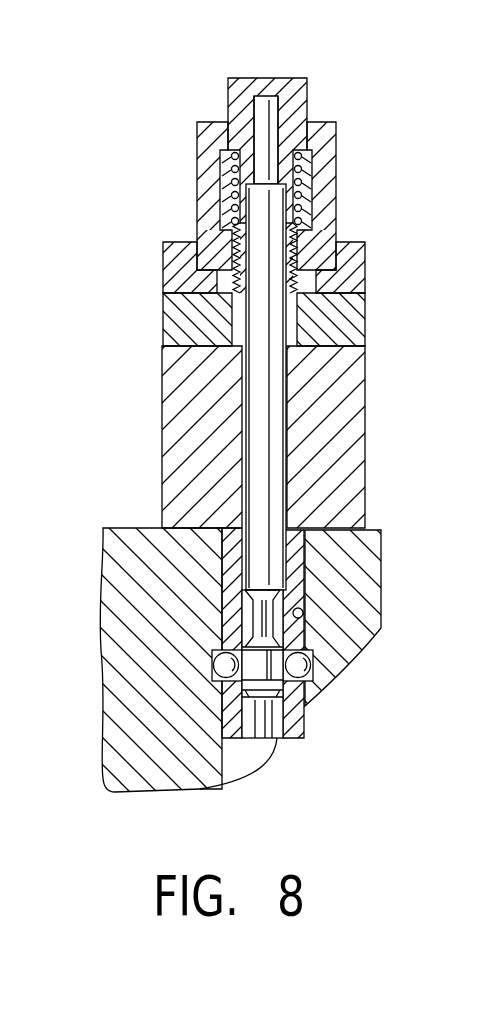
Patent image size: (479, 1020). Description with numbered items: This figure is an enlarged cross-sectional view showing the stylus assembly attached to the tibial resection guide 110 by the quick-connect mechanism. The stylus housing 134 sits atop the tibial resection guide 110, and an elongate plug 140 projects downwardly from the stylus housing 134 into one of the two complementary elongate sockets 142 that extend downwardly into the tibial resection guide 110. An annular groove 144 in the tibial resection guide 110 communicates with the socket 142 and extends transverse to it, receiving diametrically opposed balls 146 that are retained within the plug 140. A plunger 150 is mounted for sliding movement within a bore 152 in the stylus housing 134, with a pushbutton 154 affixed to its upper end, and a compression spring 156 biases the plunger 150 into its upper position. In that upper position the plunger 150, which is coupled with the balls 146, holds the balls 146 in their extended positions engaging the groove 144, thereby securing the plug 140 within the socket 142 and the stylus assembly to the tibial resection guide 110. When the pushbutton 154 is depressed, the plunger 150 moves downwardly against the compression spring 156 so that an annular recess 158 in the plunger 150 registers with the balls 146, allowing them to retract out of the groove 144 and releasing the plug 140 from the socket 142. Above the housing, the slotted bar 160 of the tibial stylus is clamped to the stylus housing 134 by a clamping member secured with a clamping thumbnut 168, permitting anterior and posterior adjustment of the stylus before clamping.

The tibial resection guide 110 is at (378, 528).
The stylus housing 134 is at (350, 460).
The elongate plug 140 is at (307, 580).
The elongate socket 142 is at (307, 623).
The annular groove 144 is at (311, 699).
The ball 146 is at (212, 668).
The plunger 150 is at (277, 383).
The bore 152 is at (280, 407).
The pushbutton 154 is at (309, 92).
The compression spring 156 is at (310, 161).
The annular recess 158 is at (242, 620).
The slotted bar 160 is at (342, 320).
The clamping thumbnut 168 is at (338, 203).